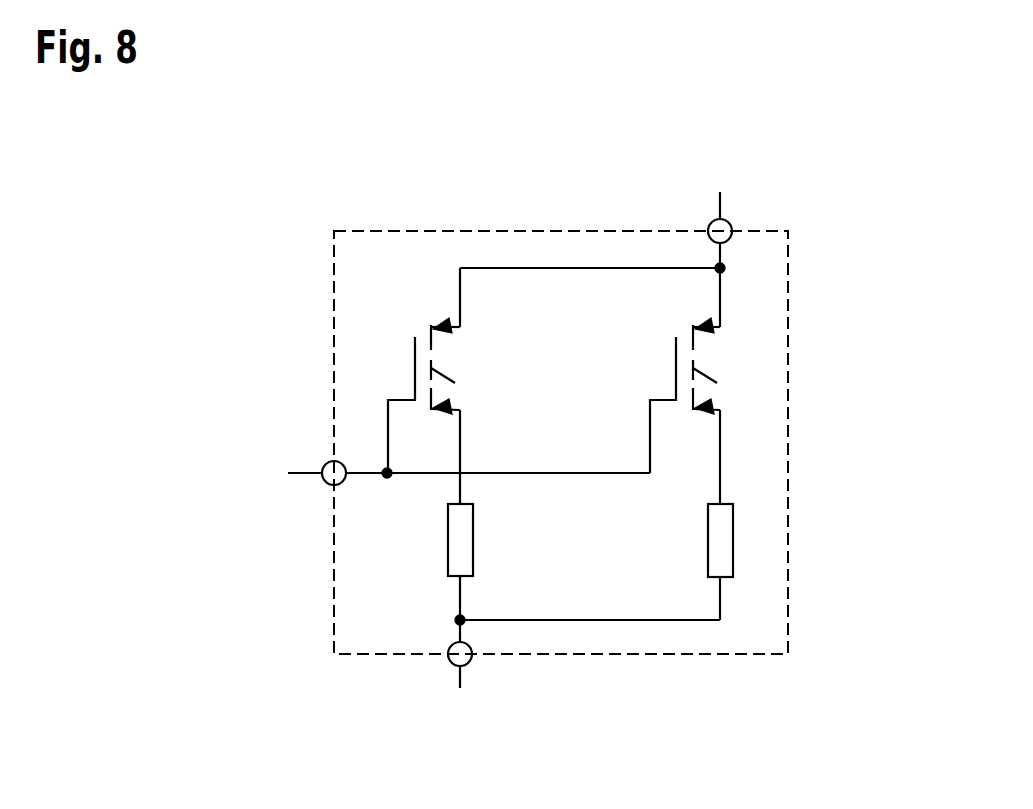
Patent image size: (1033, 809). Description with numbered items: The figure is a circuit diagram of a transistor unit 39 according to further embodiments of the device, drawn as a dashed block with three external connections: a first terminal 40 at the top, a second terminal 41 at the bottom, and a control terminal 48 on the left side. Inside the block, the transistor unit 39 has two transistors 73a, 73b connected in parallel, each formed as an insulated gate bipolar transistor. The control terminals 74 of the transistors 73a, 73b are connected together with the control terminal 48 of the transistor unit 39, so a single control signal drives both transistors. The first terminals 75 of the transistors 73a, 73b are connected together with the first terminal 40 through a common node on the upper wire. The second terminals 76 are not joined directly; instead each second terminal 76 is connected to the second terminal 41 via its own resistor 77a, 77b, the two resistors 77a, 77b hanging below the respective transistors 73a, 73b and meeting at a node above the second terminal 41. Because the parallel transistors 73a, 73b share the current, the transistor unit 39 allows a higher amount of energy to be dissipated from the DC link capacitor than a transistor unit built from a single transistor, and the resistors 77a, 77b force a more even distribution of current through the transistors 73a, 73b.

The transistor unit 39 is at (553, 231).
The first terminal 40 is at (733, 222).
The second terminal 41 is at (468, 662).
The control terminal 48 is at (324, 467).
The transistor 73a is at (440, 323).
The transistor 73b is at (703, 323).
The control terminal 74 is at (398, 398).
The first terminal 75 is at (460, 325).
The second terminal 76 is at (460, 413).
The resistor 77a is at (473, 540).
The resistor 77b is at (733, 534).